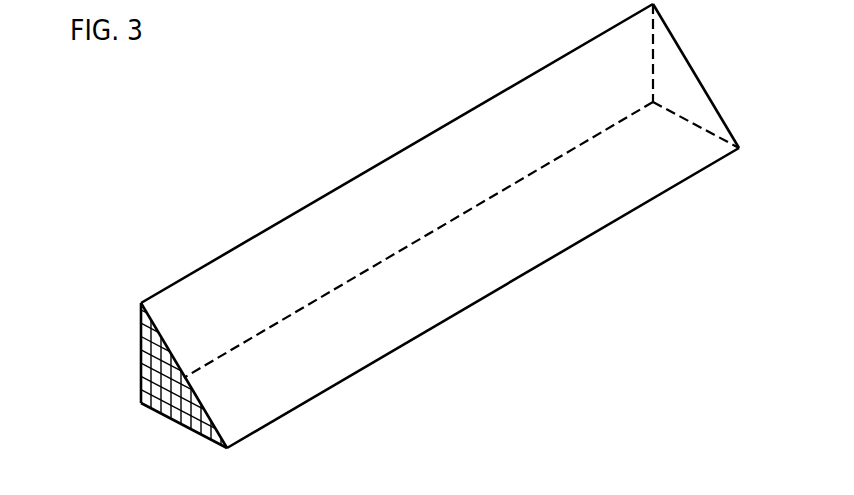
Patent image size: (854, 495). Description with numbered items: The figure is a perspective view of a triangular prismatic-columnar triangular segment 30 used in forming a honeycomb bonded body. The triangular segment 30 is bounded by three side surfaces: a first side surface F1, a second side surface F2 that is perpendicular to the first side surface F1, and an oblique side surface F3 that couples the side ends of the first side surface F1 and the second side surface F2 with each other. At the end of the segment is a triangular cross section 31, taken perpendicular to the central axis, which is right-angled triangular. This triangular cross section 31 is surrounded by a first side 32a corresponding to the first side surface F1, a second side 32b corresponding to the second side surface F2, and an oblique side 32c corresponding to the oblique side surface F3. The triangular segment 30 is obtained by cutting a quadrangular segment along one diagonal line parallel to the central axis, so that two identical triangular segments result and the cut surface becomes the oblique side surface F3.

The triangular segment 30 is at (146, 122).
The triangular cross section 31 is at (198, 398).
The first side 32a is at (141, 362).
The second side 32b is at (185, 428).
The oblique side 32c is at (160, 338).
The first side surface F1 is at (298, 233).
The second side surface F2 is at (477, 285).
The oblique side surface F3 is at (355, 200).